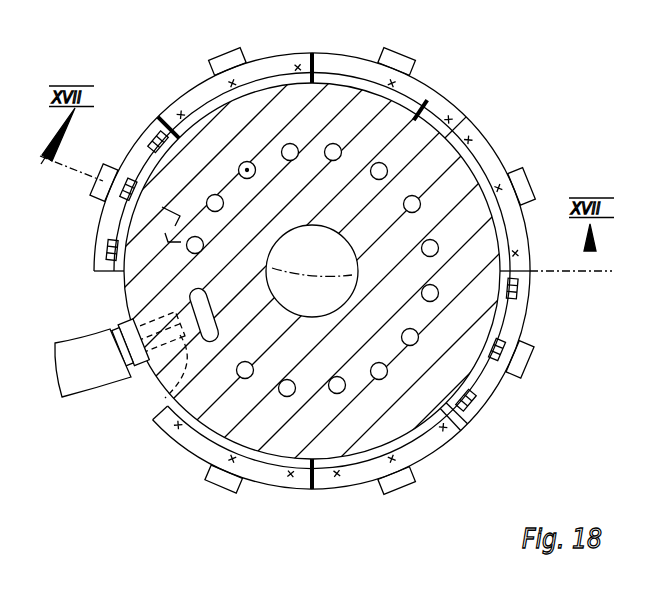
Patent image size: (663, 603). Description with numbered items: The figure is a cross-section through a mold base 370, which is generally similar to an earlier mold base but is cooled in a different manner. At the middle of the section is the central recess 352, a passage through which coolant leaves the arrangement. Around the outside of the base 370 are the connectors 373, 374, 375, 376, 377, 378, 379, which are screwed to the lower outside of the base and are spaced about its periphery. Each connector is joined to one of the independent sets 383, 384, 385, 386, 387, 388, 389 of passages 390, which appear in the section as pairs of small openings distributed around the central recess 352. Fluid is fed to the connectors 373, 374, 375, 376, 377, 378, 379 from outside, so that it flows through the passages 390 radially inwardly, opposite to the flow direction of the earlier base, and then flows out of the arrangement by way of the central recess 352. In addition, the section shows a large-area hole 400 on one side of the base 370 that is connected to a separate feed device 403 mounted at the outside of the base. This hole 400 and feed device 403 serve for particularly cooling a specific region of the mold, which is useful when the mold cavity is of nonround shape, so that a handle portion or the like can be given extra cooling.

The central recess 352 is at (312, 271).
The mold base 370 is at (428, 104).
The connector 373 is at (135, 141).
The connector 374 is at (270, 56).
The connector 375 is at (342, 58).
The connector 376 is at (503, 157).
The connector 377 is at (528, 328).
The connector 378 is at (434, 455).
The connector 379 is at (268, 490).
The set of passages 383 is at (219, 212).
The set of passages 384 is at (288, 161).
The set of passages 385 is at (370, 172).
The set of passages 386 is at (406, 212).
The set of passages 387 is at (421, 294).
The set of passages 388 is at (371, 370).
The set of passages 389 is at (287, 380).
The passage 390 is at (249, 162).
The large-area hole 400 is at (170, 393).
The separate feed device 403 is at (84, 390).